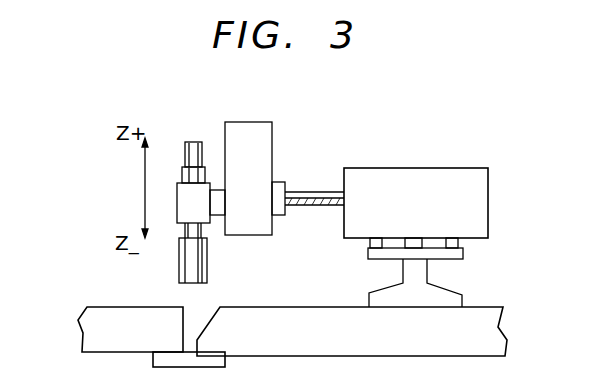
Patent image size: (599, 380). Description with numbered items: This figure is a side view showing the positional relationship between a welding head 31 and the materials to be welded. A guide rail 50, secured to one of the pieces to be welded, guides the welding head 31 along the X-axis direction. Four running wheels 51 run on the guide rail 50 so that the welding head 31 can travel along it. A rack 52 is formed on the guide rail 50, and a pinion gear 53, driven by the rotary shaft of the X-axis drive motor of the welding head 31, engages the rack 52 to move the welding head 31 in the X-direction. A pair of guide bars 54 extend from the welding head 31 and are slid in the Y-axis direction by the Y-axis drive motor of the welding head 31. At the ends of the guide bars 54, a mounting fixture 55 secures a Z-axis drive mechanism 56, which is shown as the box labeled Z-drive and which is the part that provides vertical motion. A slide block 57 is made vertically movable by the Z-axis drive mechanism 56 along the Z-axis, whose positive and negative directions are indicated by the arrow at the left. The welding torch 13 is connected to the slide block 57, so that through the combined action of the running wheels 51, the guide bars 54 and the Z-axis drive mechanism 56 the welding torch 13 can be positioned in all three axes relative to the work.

The welding torch 13 is at (207, 267).
The welding head 31 is at (488, 192).
The guide rail 50 is at (465, 297).
The running wheels 51 is at (370, 245).
The rack 52 is at (415, 245).
The pinion gear 53 is at (430, 246).
The guide bars 54 is at (310, 192).
The mounting fixture 55 is at (280, 182).
The Z-axis drive mechanism 56 is at (237, 122).
The slide block 57 is at (215, 190).